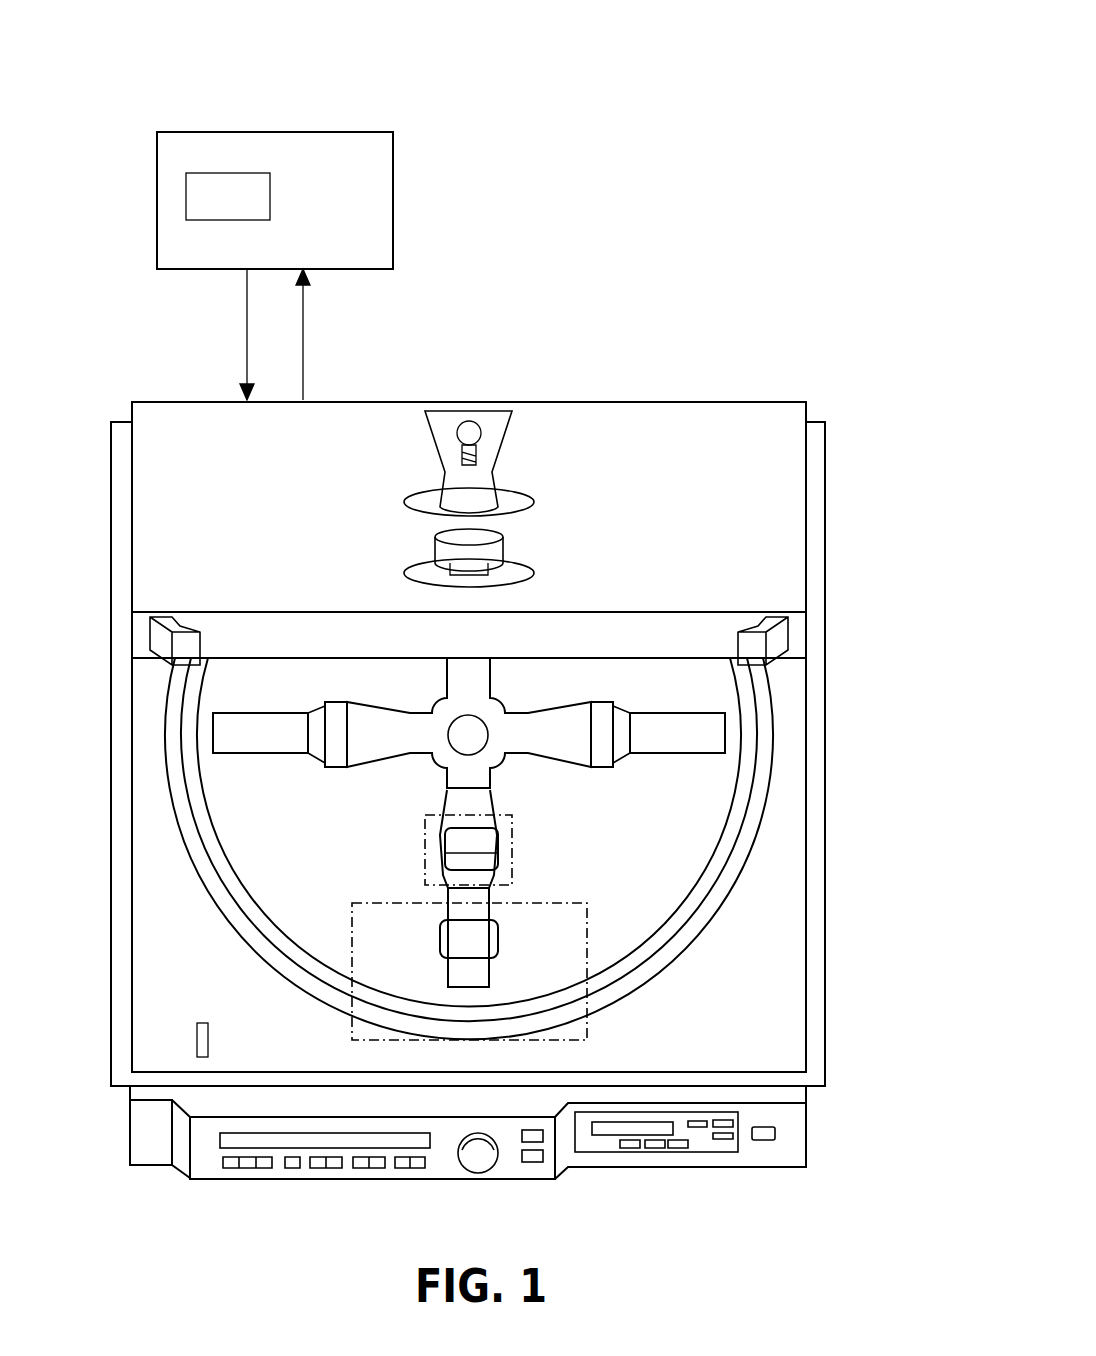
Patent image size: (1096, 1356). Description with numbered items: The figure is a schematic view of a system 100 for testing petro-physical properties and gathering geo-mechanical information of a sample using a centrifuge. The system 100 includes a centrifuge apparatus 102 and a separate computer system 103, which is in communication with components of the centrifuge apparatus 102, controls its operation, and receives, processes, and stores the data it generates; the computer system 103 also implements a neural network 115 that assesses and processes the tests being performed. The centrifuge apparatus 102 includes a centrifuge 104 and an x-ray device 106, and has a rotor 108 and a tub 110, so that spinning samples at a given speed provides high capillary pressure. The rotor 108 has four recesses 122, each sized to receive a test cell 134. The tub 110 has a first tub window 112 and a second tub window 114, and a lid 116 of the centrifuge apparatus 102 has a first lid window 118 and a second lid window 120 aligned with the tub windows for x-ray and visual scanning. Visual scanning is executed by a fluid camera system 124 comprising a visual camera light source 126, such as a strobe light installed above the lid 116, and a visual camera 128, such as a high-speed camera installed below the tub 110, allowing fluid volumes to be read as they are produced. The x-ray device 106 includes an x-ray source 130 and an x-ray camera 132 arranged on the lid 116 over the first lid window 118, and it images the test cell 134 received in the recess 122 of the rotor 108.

The system 100 is at (632, 78).
The centrifuge apparatus 102 is at (468, 790).
The computer system 103 is at (216, 239).
The centrifuge 104 is at (787, 800).
The x-ray device 106 is at (351, 1036).
The rotor 108 is at (469, 752).
The tub 110 is at (692, 865).
The first tub window 112 is at (500, 942).
The second tub window 114 is at (537, 833).
The neural network 115 is at (217, 176).
The lid 116 is at (718, 420).
The first lid window 118 is at (520, 578).
The second lid window 120 is at (520, 490).
The recesses 122 is at (324, 731).
The fluid camera system 124 is at (511, 866).
The visual camera light source 126 is at (432, 440).
The visual camera 128 is at (425, 870).
The x-ray source 130 is at (590, 1035).
The x-ray camera 132 is at (440, 550).
The test cell 134 is at (287, 740).